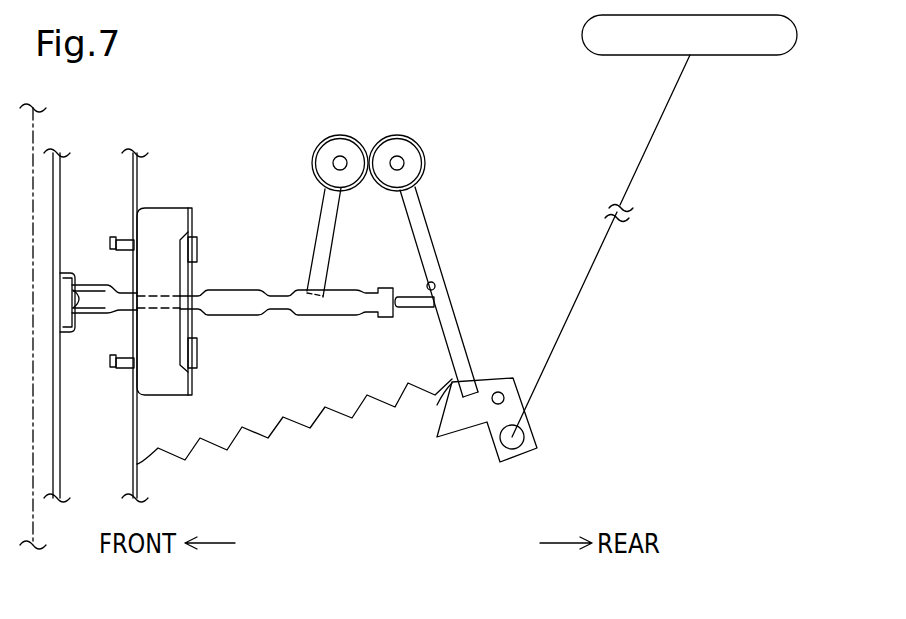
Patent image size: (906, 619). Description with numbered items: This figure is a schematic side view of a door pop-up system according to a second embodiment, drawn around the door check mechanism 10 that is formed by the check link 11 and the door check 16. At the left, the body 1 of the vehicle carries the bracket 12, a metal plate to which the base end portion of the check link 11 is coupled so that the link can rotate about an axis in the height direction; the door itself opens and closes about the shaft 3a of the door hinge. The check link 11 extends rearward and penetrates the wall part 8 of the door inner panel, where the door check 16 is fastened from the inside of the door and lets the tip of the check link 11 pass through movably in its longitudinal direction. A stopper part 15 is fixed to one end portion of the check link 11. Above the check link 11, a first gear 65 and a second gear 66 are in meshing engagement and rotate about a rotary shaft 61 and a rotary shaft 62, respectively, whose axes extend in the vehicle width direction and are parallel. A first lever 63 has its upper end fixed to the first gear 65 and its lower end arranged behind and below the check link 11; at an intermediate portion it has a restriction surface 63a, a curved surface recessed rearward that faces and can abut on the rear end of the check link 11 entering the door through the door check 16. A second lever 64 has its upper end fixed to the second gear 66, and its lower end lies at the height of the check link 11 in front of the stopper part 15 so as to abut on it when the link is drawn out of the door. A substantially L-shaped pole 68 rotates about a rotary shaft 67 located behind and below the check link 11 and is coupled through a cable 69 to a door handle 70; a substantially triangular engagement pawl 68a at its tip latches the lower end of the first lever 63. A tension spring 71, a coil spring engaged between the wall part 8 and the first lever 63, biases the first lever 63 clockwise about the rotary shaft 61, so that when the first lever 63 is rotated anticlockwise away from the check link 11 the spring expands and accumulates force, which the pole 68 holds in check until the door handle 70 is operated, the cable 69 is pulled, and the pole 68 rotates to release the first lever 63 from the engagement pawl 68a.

The body 1 is at (72, 174).
The shaft 3a is at (46, 133).
The wall part 8 is at (140, 486).
The door check mechanism 10 is at (295, 237).
The check link 11 is at (258, 294).
The bracket 12 is at (66, 273).
The stopper part 15 is at (415, 310).
The door check 16 is at (172, 252).
The rotary shaft 61 is at (402, 163).
The rotary shaft 62 is at (336, 163).
The first lever 63 is at (424, 213).
The restriction surface 63a is at (435, 288).
The second lever 64 is at (319, 204).
The first gear 65 is at (399, 135).
The second gear 66 is at (338, 135).
The rotary shaft 67 is at (498, 391).
The pole 68 is at (467, 421).
The engagement pawl 68a is at (437, 405).
The cable 69 is at (599, 260).
The door handle 70 is at (625, 47).
The tension spring 71 is at (297, 424).